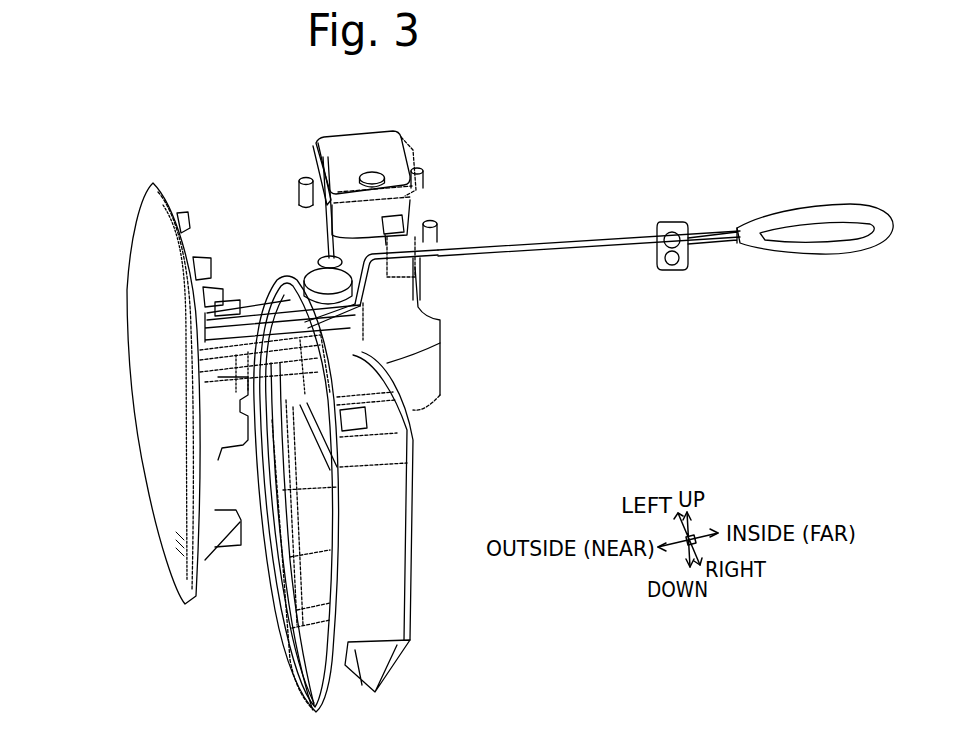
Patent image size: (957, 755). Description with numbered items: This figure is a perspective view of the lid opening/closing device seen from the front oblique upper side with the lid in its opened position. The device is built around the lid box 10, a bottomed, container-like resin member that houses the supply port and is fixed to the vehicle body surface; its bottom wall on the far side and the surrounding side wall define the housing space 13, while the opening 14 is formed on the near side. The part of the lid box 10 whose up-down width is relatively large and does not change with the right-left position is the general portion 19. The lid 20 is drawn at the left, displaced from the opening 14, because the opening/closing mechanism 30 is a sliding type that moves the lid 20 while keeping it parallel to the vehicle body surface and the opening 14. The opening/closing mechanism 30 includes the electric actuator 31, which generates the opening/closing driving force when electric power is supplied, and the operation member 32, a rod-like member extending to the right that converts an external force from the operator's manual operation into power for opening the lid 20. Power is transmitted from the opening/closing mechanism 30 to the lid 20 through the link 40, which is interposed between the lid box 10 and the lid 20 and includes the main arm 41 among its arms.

The lid box 10 is at (398, 511).
The housing space 13 is at (307, 523).
The opening 14 is at (271, 514).
The general portion 19 is at (297, 648).
The lid 20 is at (155, 352).
The opening/closing mechanism 30 is at (262, 182).
The electric actuator 31 is at (388, 148).
The operation member 32 is at (581, 242).
The link 40 is at (246, 306).
The main arm 41 is at (260, 372).